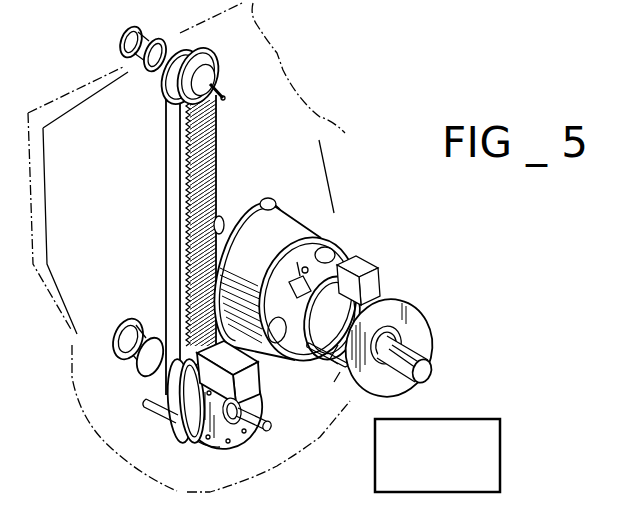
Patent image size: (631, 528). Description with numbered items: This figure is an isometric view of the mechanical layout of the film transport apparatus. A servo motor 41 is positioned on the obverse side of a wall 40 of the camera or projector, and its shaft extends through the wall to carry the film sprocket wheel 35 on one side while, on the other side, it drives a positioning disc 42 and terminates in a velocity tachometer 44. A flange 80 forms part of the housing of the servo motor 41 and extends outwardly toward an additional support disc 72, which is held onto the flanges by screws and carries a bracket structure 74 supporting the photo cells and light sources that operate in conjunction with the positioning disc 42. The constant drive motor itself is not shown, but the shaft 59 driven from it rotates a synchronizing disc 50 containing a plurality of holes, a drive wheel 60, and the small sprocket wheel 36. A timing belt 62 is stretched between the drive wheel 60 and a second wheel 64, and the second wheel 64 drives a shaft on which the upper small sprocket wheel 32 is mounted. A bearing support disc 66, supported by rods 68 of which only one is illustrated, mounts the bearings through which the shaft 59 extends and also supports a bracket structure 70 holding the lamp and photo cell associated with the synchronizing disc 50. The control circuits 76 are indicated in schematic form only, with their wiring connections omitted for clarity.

The upper small sprocket wheel 32 is at (123, 32).
The second wheel 64 is at (200, 54).
The timing belt 62 is at (172, 177).
The sprocket wheel 35 is at (220, 227).
The wall 40 is at (339, 124).
The servo motor 41 is at (322, 227).
The flange 80 is at (305, 270).
The additional support disc 72 is at (368, 270).
The bracket structure 74 is at (380, 284).
The velocity tachometer 44 is at (422, 354).
The positioning disc 42 is at (343, 368).
The bracket structure 70 is at (258, 366).
The shaft 59 is at (275, 411).
The synchronizing disc 50 is at (217, 446).
The bearing support disc 66 is at (192, 440).
The rods 68 is at (157, 416).
The drive wheel 60 is at (160, 389).
The small sprocket wheel 36 is at (110, 344).
The control circuits 76 is at (500, 471).